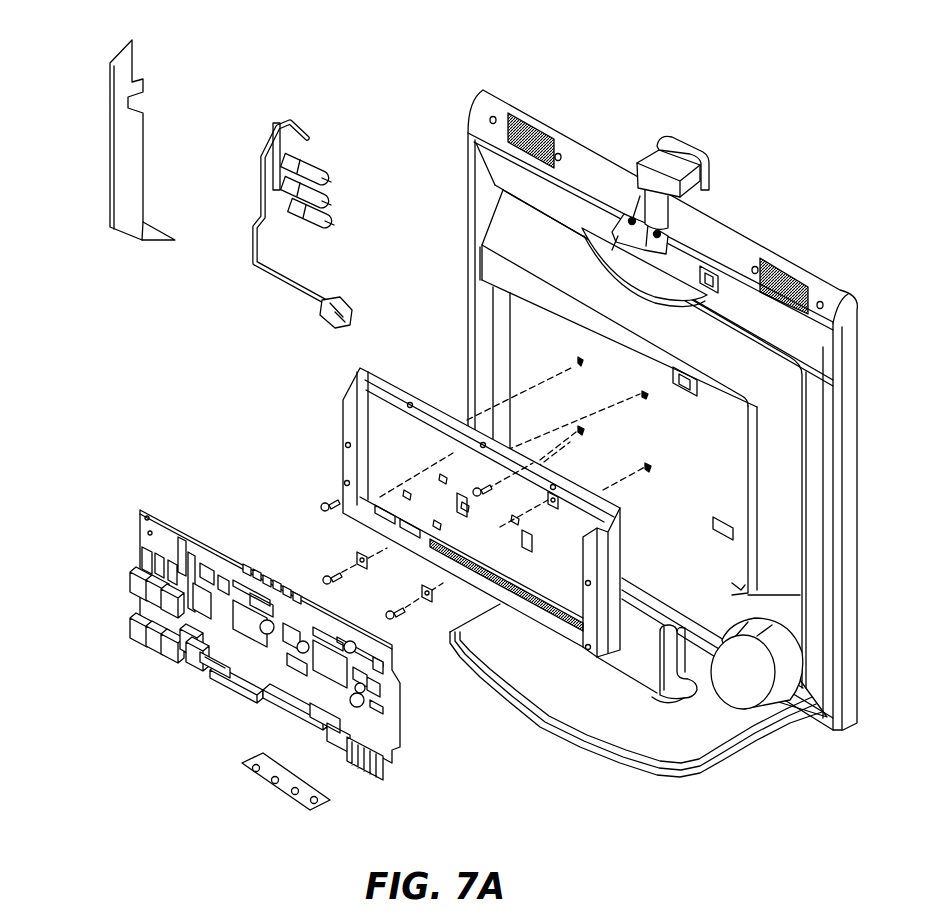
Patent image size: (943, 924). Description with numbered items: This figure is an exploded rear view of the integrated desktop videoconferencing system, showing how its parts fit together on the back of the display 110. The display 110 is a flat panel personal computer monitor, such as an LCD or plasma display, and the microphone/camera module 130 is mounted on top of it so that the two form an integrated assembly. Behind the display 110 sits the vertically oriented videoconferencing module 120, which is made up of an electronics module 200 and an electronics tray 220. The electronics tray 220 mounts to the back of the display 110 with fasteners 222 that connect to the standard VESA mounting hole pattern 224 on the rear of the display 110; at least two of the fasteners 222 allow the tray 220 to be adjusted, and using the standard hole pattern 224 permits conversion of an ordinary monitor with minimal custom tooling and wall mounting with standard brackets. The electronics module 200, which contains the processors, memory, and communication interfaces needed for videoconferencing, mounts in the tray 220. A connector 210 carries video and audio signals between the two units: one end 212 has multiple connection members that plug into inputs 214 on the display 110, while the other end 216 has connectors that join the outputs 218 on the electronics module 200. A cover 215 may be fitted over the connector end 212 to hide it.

The display 110 is at (634, 410).
The videoconferencing module 120 is at (317, 409).
The microphone/camera module 130 is at (778, 218).
The electronics module 200 is at (244, 640).
The connector 210 is at (290, 225).
The connector end 212 is at (320, 175).
The inputs 214 is at (510, 315).
The cover 215 is at (128, 42).
The connector end 216 is at (340, 306).
The outputs 218 is at (207, 672).
The electronics tray 220 is at (343, 398).
The fasteners 222 is at (308, 509).
The VESA mounting hole pattern 224 is at (563, 366).